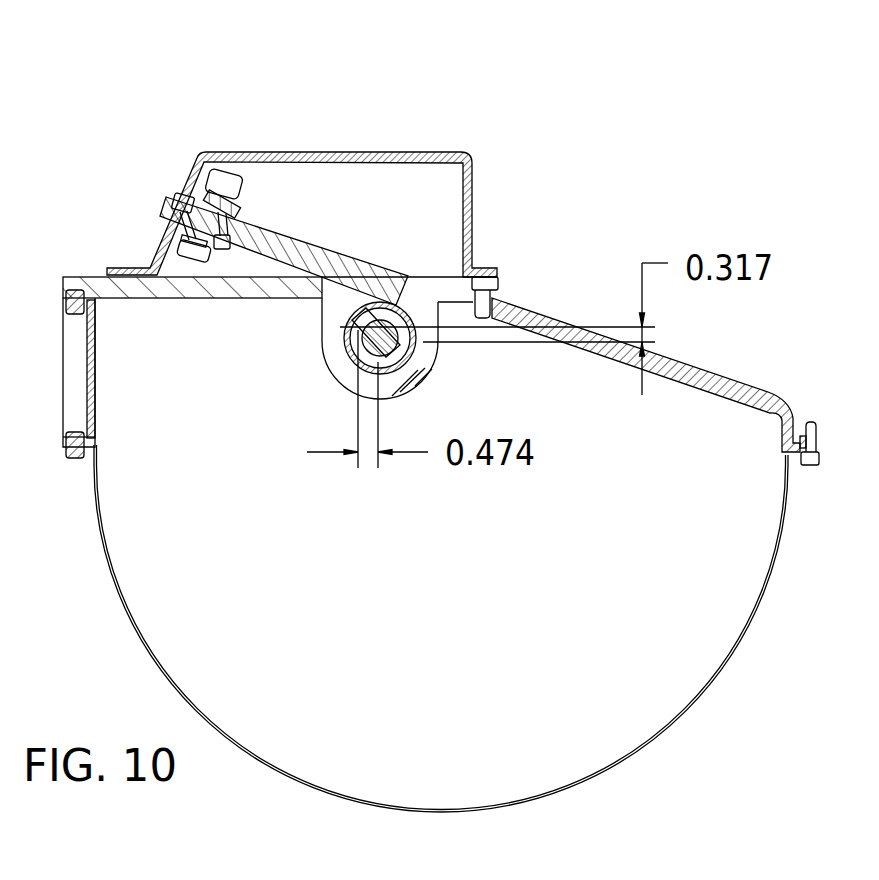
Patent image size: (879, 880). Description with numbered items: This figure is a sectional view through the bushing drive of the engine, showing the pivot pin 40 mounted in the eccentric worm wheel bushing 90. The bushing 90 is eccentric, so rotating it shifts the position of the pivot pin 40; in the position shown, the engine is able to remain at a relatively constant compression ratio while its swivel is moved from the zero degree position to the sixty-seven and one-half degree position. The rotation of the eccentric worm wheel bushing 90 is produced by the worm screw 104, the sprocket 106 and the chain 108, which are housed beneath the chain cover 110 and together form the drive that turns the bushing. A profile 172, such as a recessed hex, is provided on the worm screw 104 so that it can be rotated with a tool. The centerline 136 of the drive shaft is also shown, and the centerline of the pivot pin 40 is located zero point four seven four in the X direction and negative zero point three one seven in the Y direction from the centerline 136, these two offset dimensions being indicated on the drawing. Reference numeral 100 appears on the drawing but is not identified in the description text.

The pivot pin 40 is at (350, 362).
The eccentric worm wheel bushing 90 is at (427, 358).
The lid 100 is at (432, 262).
The worm screw 104 is at (290, 237).
The sprocket 106 is at (243, 200).
The chain 108 is at (240, 187).
The chain cover 110 is at (207, 152).
The centerline of the drive shaft 136 is at (340, 337).
The profile 172 is at (180, 207).